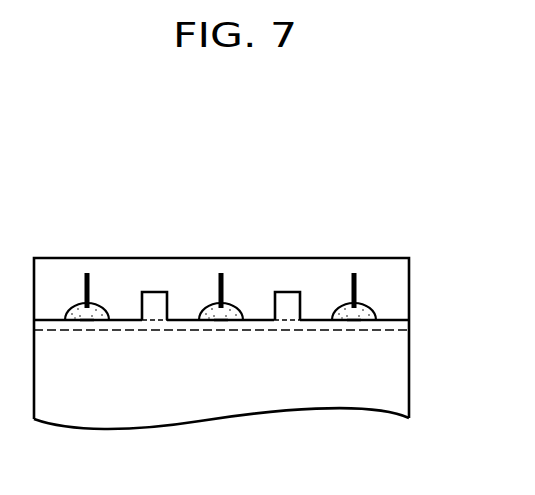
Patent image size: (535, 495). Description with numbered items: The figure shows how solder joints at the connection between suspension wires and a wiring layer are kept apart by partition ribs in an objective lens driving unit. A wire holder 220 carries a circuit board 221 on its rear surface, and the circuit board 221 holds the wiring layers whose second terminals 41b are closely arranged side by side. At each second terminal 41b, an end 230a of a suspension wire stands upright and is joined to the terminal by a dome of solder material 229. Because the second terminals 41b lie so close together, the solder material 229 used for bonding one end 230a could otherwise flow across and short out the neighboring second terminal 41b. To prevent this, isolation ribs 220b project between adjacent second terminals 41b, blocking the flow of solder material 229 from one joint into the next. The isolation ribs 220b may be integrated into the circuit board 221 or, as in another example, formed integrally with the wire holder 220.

The wire holder 220 is at (404, 375).
The circuit board 221 is at (424, 324).
The isolation rib 220b is at (163, 297).
The solder 229 is at (103, 306).
The end of suspension wire 230a is at (84, 289).
The second terminal 41b is at (88, 323).